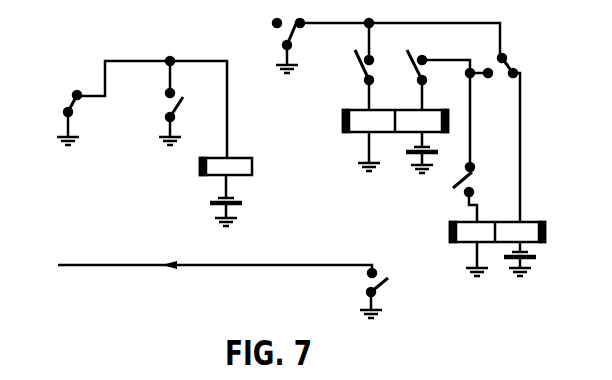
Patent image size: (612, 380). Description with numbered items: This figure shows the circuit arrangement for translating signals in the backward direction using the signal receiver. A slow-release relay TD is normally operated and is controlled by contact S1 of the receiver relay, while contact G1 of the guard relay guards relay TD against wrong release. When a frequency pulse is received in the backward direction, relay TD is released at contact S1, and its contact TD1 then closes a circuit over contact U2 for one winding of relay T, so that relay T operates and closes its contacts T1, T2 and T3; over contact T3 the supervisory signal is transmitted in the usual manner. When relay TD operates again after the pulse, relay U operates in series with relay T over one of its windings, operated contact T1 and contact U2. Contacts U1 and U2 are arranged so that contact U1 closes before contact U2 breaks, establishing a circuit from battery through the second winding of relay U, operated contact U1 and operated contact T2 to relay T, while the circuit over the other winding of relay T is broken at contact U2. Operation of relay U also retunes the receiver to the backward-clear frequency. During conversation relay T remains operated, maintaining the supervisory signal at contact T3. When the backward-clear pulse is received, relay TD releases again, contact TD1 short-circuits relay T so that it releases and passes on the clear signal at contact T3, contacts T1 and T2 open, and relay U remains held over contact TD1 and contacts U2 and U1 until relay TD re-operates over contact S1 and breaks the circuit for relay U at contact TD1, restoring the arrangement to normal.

The contact of relay S S1 is at (59, 118).
The contact of guard relay G G1 is at (160, 103).
The slow-release relay TD is at (239, 191).
The contact of relay TD TD1 is at (273, 46).
The contact of relay T T1 is at (354, 66).
The contact of relay U U1 is at (442, 80).
The contact of relay U U2 is at (501, 138).
The relay U is at (389, 141).
The contact of relay T T2 is at (475, 147).
The relay T is at (506, 249).
The contact of relay T T3 is at (361, 293).